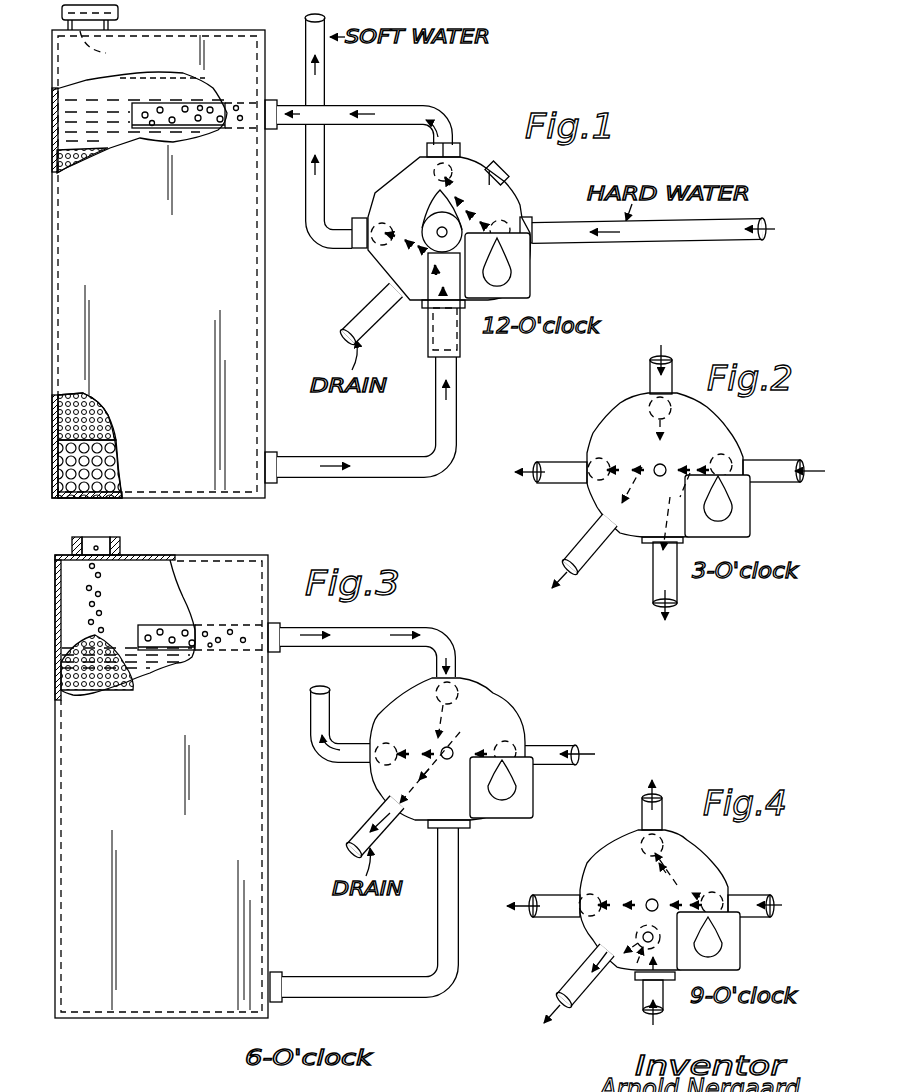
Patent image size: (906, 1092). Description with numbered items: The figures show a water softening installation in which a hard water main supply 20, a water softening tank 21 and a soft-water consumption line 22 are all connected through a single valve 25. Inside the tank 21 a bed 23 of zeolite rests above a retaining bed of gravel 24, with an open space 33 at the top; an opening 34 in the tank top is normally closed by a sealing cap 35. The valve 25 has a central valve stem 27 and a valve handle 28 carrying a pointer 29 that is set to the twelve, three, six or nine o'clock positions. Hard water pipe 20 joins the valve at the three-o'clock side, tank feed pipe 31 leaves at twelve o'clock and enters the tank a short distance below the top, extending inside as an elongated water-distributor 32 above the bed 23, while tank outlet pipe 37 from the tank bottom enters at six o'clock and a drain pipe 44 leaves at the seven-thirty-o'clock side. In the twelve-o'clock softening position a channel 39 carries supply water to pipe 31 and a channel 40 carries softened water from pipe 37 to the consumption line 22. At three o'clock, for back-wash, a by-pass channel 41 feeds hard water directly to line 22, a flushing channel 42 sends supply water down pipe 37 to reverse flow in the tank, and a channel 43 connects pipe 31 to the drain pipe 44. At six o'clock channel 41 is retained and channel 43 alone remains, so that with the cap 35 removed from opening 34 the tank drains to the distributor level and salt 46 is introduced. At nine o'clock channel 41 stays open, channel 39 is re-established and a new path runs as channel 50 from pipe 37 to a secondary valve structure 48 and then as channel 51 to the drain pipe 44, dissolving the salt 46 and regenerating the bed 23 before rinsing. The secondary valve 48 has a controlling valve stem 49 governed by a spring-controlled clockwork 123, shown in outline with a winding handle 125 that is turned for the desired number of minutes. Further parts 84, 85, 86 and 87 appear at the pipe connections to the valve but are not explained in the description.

In FIG. 1, the hard water main supply pipe 20 is at (632, 242).
In FIG. 2, the hard water main supply pipe 20 is at (784, 490).
In FIG. 3, the hard water main supply pipe 20 is at (557, 746).
In FIG. 4, the hard water main supply pipe 20 is at (758, 891).
In FIG. 1, the water softening tank 21 is at (265, 269).
In FIG. 3, the water softening tank 21 is at (265, 839).
In FIG. 1, the soft-water consumption line 22 is at (327, 78).
In FIG. 2, the soft-water consumption line 22 is at (551, 459).
In FIG. 3, the soft-water consumption line 22 is at (341, 763).
In FIG. 4, the soft-water consumption line 22 is at (543, 893).
In FIG. 1, the bed of zeolite 23 is at (62, 160).
In FIG. 3, the bed of zeolite 23 is at (62, 681).
In FIG. 1, the retaining bed of gravel 24 is at (62, 473).
In FIG. 1, the valve 25 is at (436, 216).
In FIG. 2, the valve 25 is at (660, 463).
In FIG. 3, the valve 25 is at (456, 742).
In FIG. 4, the valve 25 is at (650, 895).
In FIG. 1, the central valve stem 27 is at (426, 221).
In FIG. 2, the central valve stem 27 is at (664, 457).
In FIG. 3, the central valve stem 27 is at (444, 772).
In FIG. 4, the central valve stem 27 is at (652, 905).
In FIG. 1, the valve handle 28 is at (429, 305).
In FIG. 1, the pointer 29 is at (421, 158).
In FIG. 1, the tank feed pipe 31 is at (421, 108).
In FIG. 2, the tank feed pipe 31 is at (675, 367).
In FIG. 3, the tank feed pipe 31 is at (460, 655).
In FIG. 4, the tank feed pipe 31 is at (634, 805).
In FIG. 1, the water-distributor 32 is at (210, 128).
In FIG. 3, the water-distributor 32 is at (143, 625).
In FIG. 1, the open space 33 is at (78, 107).
In FIG. 3, the open space 33 is at (128, 627).
In FIG. 1, the opening 34 is at (109, 49).
In FIG. 3, the opening 34 is at (101, 548).
In FIG. 1, the sealing cap 35 is at (120, 13).
In FIG. 1, the tank outlet pipe 37 is at (378, 462).
In FIG. 2, the tank outlet pipe 37 is at (647, 581).
In FIG. 3, the tank outlet pipe 37 is at (437, 860).
In FIG. 4, the tank outlet pipe 37 is at (635, 1002).
In FIG. 1, the channel 39 is at (483, 200).
In FIG. 4, the channel 39 is at (680, 875).
In FIG. 1, the channel 40 is at (403, 263).
In FIG. 2, the by-pass channel 41 is at (691, 465).
In FIG. 3, the by-pass channel 41 is at (441, 762).
In FIG. 4, the by-pass channel 41 is at (634, 887).
In FIG. 2, the flushing channel 42 is at (646, 508).
In FIG. 2, the channel 43 is at (635, 439).
In FIG. 3, the channel 43 is at (420, 721).
In FIG. 1, the drain pipe 44 is at (355, 318).
In FIG. 2, the drain pipe 44 is at (576, 554).
In FIG. 3, the drain pipe 44 is at (362, 831).
In FIG. 4, the drain pipe 44 is at (565, 986).
In FIG. 3, the salt 46 is at (103, 627).
In FIG. 4, the secondary valve structure 48 is at (620, 934).
In FIG. 4, the controlling valve stem 49 is at (656, 931).
In FIG. 4, the channel 50 is at (630, 973).
In FIG. 4, the channel 51 is at (582, 941).
In FIG. 1, the valve outlet flange 84 is at (349, 248).
In FIG. 1, the valve top flange 85 is at (460, 141).
In FIG. 1, the auxiliary port 86 is at (516, 173).
In FIG. 1, the valve inlet flange 87 is at (539, 219).
In FIG. 1, the spring-controlled clockwork 123 is at (521, 265).
In FIG. 2, the spring-controlled clockwork 123 is at (739, 514).
In FIG. 3, the spring-controlled clockwork 123 is at (501, 805).
In FIG. 4, the spring-controlled clockwork 123 is at (733, 941).
In FIG. 1, the winding handle 125 is at (529, 262).
In FIG. 2, the winding handle 125 is at (750, 506).
In FIG. 3, the winding handle 125 is at (532, 780).
In FIG. 4, the winding handle 125 is at (742, 941).